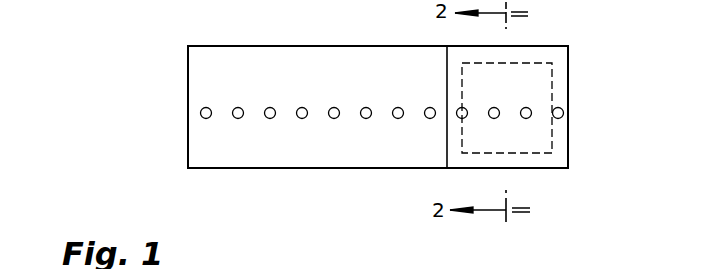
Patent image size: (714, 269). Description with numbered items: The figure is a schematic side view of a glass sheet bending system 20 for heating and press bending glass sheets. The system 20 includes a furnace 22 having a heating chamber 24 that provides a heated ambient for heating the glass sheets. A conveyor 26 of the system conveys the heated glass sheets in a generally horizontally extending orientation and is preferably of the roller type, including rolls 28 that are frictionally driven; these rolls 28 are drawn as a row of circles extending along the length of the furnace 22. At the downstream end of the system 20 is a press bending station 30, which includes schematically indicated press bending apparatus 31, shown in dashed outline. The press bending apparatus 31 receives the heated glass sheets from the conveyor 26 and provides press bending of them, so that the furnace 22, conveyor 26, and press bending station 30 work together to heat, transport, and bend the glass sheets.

The glass sheet bending system 20 is at (365, 102).
The furnace 22 is at (258, 47).
The heating chamber 24 is at (306, 56).
The conveyor 26 is at (197, 105).
The rolls 28 is at (302, 119).
The press bending station 30 is at (554, 49).
The press bending apparatus 31 is at (553, 65).